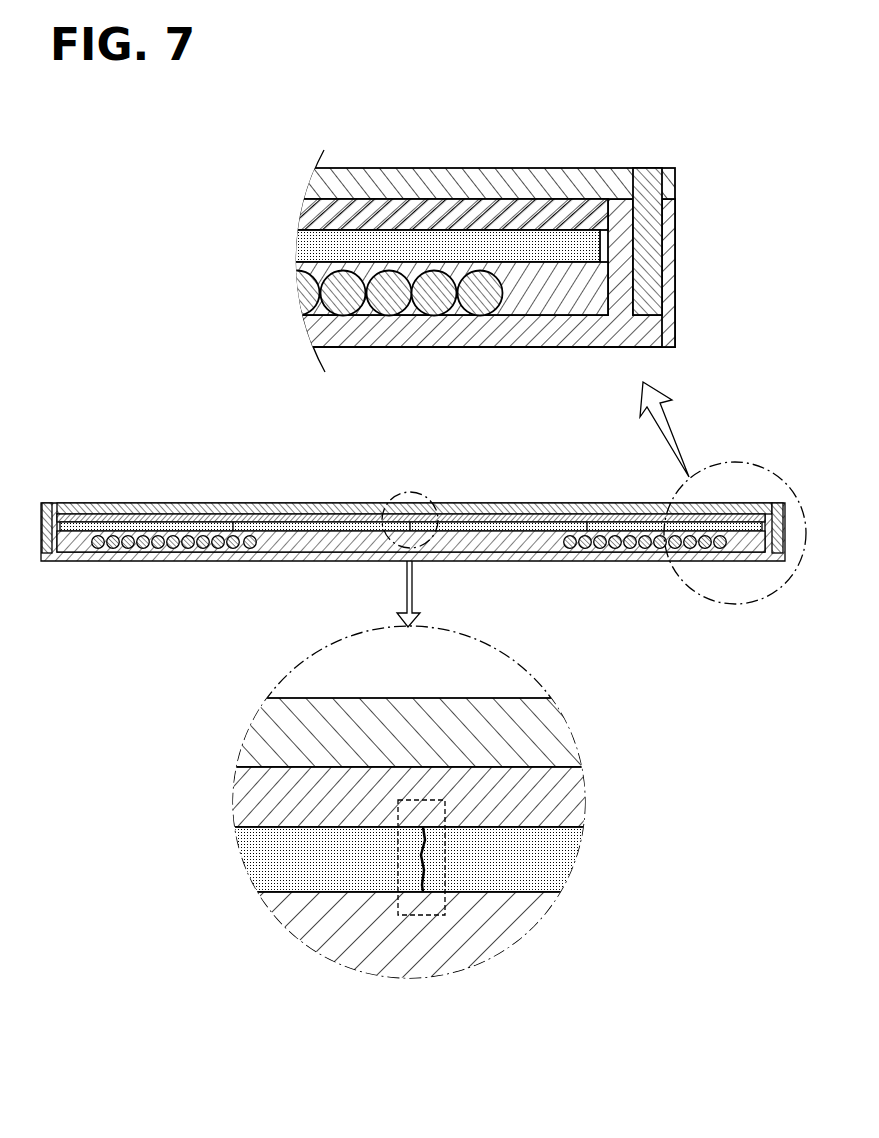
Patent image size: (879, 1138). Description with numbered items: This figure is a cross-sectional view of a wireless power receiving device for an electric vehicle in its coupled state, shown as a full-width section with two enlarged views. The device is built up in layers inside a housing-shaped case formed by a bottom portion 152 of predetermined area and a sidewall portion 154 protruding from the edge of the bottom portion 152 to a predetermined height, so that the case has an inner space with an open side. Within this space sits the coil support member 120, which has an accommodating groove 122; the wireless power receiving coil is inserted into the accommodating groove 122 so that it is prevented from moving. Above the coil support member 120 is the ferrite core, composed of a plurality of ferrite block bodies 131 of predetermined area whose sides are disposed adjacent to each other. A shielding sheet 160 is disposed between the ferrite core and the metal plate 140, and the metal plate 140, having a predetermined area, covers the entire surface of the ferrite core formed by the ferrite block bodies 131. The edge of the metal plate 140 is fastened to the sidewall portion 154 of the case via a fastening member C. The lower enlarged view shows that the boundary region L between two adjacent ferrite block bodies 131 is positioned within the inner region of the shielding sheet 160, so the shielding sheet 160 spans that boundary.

The coil support member 120 is at (558, 300).
The accommodating groove 122 is at (385, 300).
The ferrite block bodies 131 is at (577, 242).
The metal plate 140 is at (556, 185).
The bottom portion 152 is at (492, 334).
The sidewall portion 154 is at (673, 277).
The shielding sheet 160 is at (467, 207).
The fastening member C is at (660, 217).
The boundary region L is at (417, 915).